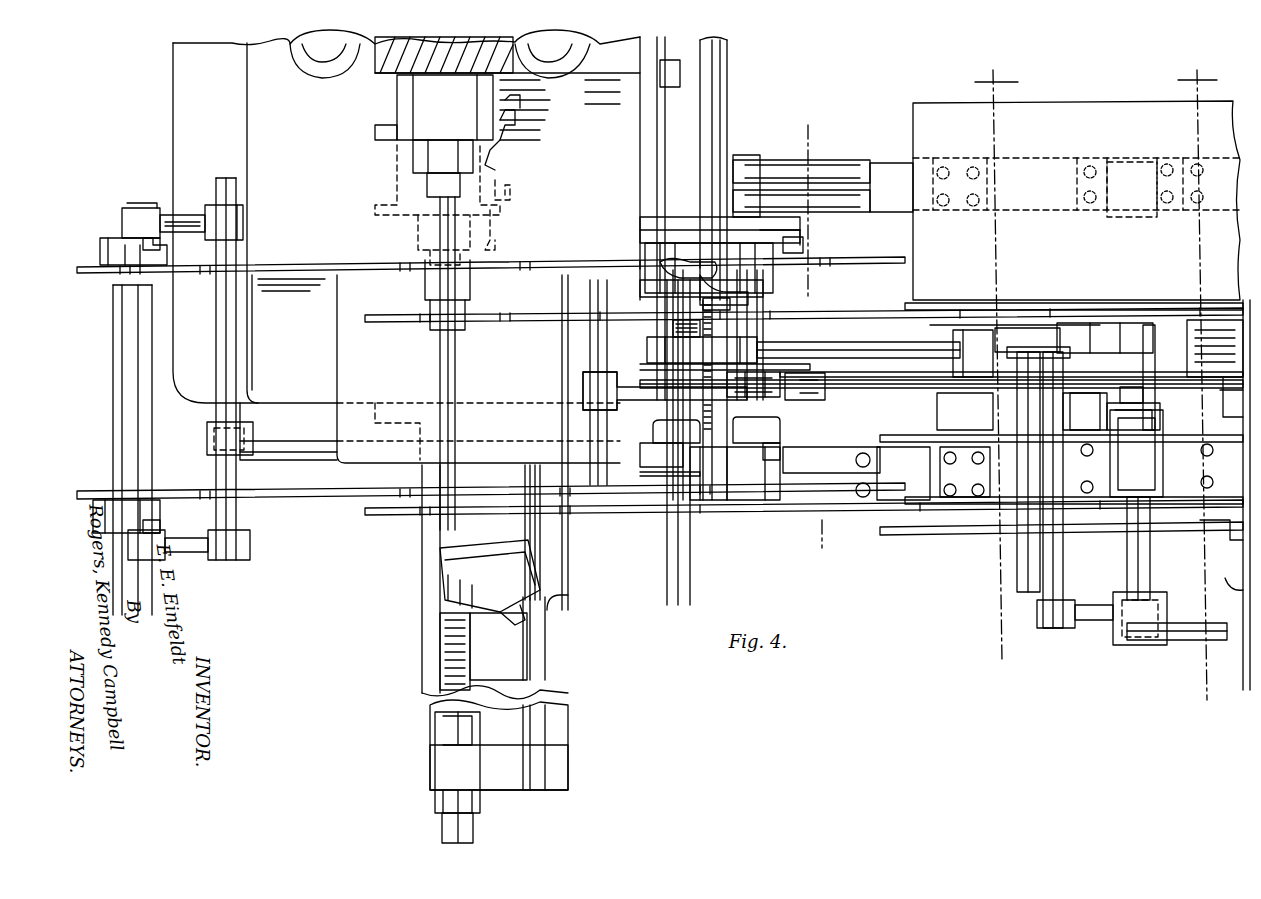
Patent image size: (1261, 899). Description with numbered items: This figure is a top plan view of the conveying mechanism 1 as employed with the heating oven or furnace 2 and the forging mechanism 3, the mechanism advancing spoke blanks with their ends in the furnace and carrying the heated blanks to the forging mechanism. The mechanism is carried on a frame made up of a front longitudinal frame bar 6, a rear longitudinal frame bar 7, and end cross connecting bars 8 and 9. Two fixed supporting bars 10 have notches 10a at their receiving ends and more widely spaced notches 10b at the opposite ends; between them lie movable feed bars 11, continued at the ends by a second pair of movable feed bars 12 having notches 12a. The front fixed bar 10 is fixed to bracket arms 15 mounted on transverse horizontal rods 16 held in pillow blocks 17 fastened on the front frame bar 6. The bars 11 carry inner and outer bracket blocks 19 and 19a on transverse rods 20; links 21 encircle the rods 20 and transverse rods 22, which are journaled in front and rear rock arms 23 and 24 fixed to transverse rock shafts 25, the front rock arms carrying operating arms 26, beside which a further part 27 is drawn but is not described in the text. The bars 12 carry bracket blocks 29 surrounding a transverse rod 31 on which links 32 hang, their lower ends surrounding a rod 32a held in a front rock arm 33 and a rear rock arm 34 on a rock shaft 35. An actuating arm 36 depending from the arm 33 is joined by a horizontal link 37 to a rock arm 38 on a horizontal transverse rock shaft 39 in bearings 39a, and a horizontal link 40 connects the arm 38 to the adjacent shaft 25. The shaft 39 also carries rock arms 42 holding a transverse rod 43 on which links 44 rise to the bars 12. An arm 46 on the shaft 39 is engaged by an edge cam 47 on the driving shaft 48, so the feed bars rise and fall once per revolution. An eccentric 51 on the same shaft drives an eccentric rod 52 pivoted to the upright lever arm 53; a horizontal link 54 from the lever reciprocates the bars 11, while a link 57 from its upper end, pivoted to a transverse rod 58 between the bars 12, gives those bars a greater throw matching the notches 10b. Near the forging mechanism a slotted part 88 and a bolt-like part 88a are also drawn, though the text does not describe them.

The conveying mechanism 1 is at (1085, 409).
The heating oven or furnace 2 is at (1058, 323).
The forging mechanism 3 is at (413, 174).
The front longitudinal frame bar 6 is at (903, 473).
The rear longitudinal frame bar 7 is at (986, 200).
The end cross connecting bar 8 is at (814, 338).
The end cross connecting bar 9 is at (996, 358).
The fixed supporting bars 10 is at (1170, 303).
The spoke blank receiving notches 10a is at (1090, 303).
The spoke blank receiving notches 10b is at (822, 312).
The movable feed bars 11 is at (1151, 377).
The movable feed bars 12 is at (845, 258).
The spoke blank receiving notches 12a is at (870, 256).
The bracket arms 15 is at (1221, 539).
The transverse horizontal rods 16 is at (1228, 577).
The pillow blocks 17 is at (1218, 495).
The inner bracket blocks 19 is at (1030, 328).
The outer bracket blocks 19a is at (1005, 462).
The transverse rods 20 is at (1010, 418).
The links 21 is at (1075, 353).
The transverse rods 22 is at (1085, 412).
The front rock arms 23 is at (1095, 605).
The rear rock arms 24 is at (1035, 327).
The transverse rock shafts 25 is at (1150, 570).
The operating arms 26 is at (1125, 640).
The bar 27 is at (1195, 641).
The bracket blocks 29 is at (105, 252).
The transverse rod 31 is at (113, 385).
The links 32 is at (155, 248).
The transverse rod 32a is at (152, 413).
The front rock arm 33 is at (198, 553).
The rear rock arm 34 is at (185, 220).
The transverse rock shaft 35 is at (222, 470).
The actuating arm 36 is at (253, 428).
The horizontal link 37 is at (318, 452).
The rock arm 38 is at (776, 416).
The horizontal transverse rock shaft 39 is at (775, 405).
The bearings 39a is at (858, 448).
The horizontal link 40 is at (906, 435).
The rock arms 42 is at (690, 243).
The transverse rod 43 is at (670, 410).
The links 44 is at (645, 290).
The arm 46 is at (803, 246).
The edge cam 47 is at (655, 232).
The driving shaft 48 is at (727, 84).
The eccentric 51 is at (655, 345).
The eccentric rod 52 is at (885, 355).
The lever arm or vibratory member 53 is at (973, 353).
The horizontal link 54 is at (1135, 406).
The link 57 is at (852, 345).
The transverse rod 58 is at (597, 338).
The slot 88 is at (490, 582).
The bolt 88a is at (430, 812).